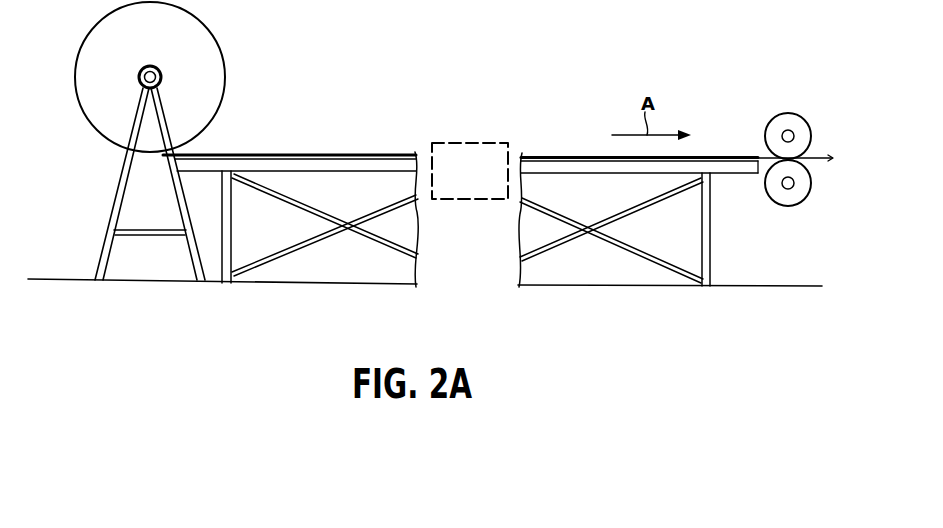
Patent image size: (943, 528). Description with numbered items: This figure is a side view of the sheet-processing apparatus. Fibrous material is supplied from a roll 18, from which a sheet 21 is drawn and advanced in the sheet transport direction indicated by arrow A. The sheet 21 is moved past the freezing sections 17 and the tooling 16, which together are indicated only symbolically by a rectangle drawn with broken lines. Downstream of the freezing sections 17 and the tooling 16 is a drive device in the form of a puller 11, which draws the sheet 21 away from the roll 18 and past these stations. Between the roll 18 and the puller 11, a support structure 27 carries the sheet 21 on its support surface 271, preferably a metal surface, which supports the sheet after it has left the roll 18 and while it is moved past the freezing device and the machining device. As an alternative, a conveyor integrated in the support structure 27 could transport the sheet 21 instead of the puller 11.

The puller 11 is at (788, 113).
The tooling 16 is at (479, 142).
The freezing sections 17 is at (475, 143).
The roll 18 is at (226, 63).
The sheet 21 is at (272, 153).
The support structure 27 is at (307, 252).
The support surface 271 is at (346, 153).